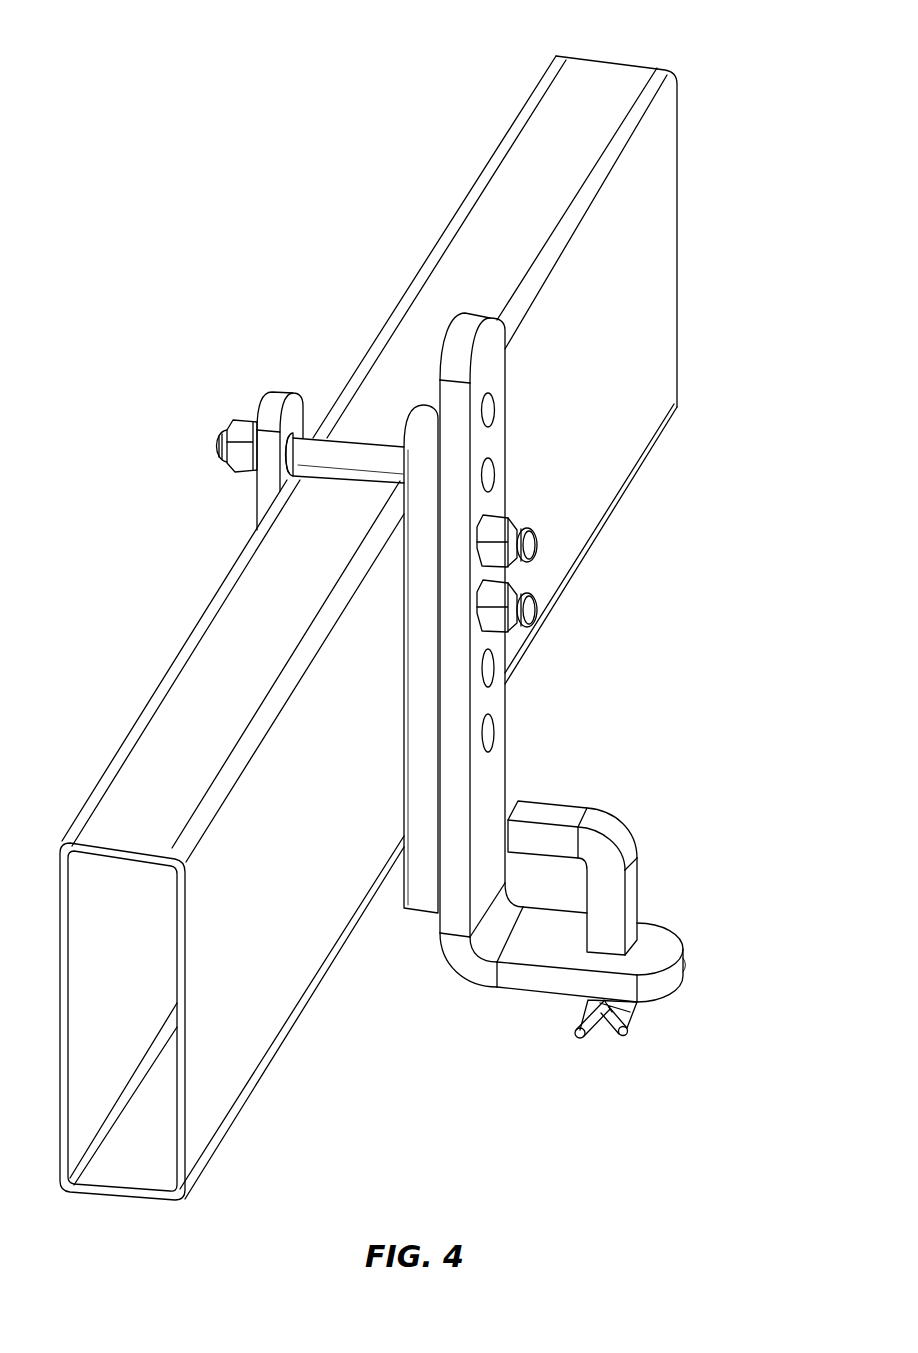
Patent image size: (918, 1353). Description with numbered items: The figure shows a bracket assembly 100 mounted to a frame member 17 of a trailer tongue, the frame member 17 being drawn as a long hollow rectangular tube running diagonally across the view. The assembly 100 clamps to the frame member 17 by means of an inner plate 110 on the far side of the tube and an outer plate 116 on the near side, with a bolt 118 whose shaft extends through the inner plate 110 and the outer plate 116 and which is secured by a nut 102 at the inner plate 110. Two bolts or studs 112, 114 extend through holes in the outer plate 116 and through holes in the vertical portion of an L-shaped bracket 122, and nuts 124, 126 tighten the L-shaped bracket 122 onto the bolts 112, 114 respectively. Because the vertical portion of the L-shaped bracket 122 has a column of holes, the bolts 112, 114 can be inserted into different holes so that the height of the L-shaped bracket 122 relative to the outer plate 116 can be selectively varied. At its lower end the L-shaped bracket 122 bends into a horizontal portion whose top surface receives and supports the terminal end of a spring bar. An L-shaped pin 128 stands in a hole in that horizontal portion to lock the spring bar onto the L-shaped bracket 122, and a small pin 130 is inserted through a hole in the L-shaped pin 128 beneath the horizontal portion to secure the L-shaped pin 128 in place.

The frame member 17 is at (255, 1033).
The bracket assembly 100 is at (236, 400).
The nut 102 is at (238, 457).
The inner plate 110 is at (273, 403).
The bolt 112 is at (530, 543).
The bolt 114 is at (530, 608).
The outer plate 116 is at (422, 895).
The bolt 118 is at (348, 450).
The L-shaped bracket 122 is at (490, 372).
The nut 124 is at (512, 513).
The nut 126 is at (510, 630).
The L-shaped pin 128 is at (617, 828).
The pin 130 is at (585, 1040).